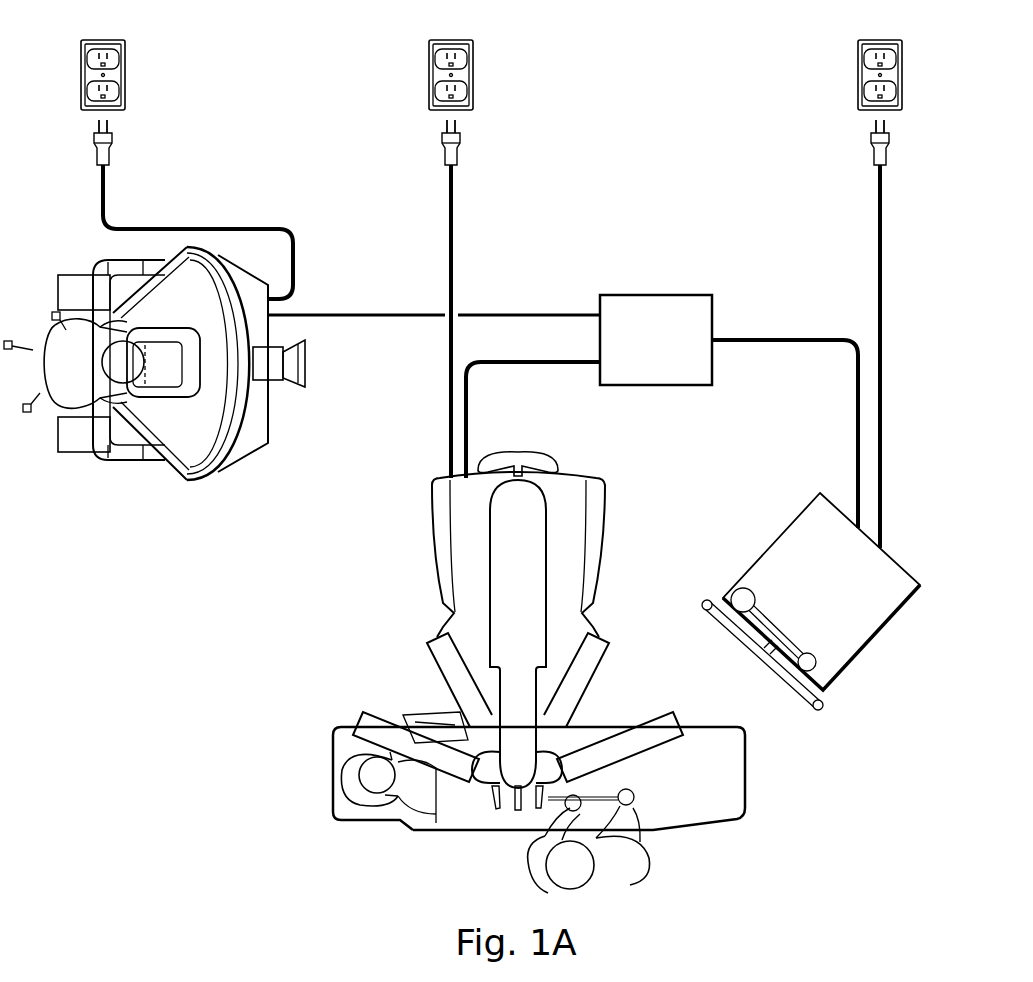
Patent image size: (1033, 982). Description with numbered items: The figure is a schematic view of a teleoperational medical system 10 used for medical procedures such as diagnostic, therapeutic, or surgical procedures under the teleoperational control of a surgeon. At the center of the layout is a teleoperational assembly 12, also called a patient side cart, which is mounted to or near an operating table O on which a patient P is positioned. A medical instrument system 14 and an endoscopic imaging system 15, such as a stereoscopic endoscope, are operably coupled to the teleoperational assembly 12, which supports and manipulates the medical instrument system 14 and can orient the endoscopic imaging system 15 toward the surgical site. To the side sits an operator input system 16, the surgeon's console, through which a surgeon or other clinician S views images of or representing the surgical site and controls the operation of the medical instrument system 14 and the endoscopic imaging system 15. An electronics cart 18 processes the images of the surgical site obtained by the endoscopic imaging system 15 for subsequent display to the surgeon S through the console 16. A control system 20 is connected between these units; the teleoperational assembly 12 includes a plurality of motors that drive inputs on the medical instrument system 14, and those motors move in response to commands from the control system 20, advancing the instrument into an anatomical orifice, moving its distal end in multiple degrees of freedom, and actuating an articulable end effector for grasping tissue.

The teleoperational medical system 10 is at (662, 64).
The teleoperational assembly 12 is at (432, 520).
The medical instrument system 14 is at (590, 727).
The endoscopic imaging system 15 is at (510, 812).
The operator input system 16 is at (245, 460).
The electronics cart 18 is at (870, 643).
The control system 20 is at (644, 355).
The surgeon S is at (47, 328).
The patient P is at (362, 806).
The operating table O is at (683, 834).